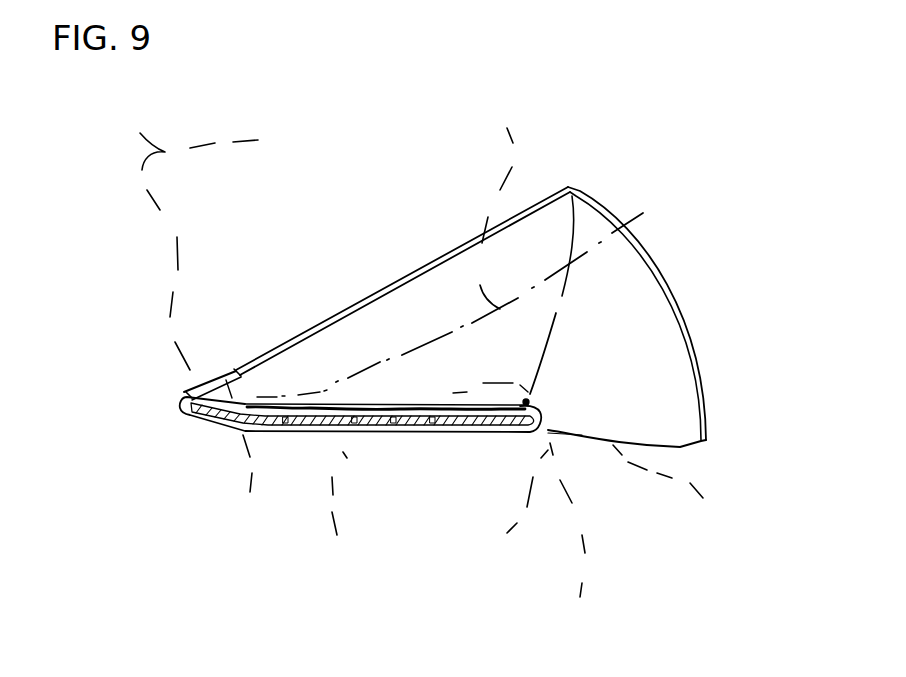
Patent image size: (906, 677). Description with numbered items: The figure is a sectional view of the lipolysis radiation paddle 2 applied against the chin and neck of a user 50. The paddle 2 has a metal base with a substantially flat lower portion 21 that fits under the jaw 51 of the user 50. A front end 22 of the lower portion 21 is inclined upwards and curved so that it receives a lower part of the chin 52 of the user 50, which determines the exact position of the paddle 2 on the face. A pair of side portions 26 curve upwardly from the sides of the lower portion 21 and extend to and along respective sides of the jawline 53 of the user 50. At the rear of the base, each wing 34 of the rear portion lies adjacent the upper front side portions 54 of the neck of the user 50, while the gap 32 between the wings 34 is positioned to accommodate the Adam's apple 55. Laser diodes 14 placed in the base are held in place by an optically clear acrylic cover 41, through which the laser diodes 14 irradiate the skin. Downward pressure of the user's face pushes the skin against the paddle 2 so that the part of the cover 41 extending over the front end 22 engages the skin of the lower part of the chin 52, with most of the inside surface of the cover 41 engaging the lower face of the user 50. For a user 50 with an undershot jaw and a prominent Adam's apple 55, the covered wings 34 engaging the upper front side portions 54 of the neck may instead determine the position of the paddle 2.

The lipolysis radiation paddle 2 is at (603, 160).
The laser diodes 14 is at (432, 433).
The lower portion 21 is at (403, 431).
The front end 22 is at (224, 420).
The side portions 26 is at (440, 297).
The recess or gap 32 is at (573, 445).
The wing or flap 34 is at (667, 352).
The cover or casing 41 is at (214, 398).
The user or subject 50 is at (150, 297).
The jaw 51 is at (344, 514).
The chin 52 is at (248, 485).
The jawline 53 is at (502, 202).
The upper front side portions of the neck 54 is at (675, 490).
The Adam's apple 55 is at (524, 520).